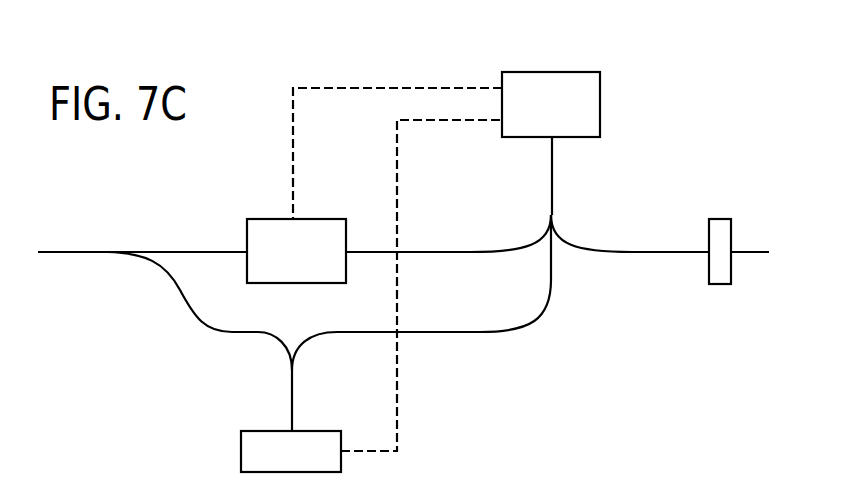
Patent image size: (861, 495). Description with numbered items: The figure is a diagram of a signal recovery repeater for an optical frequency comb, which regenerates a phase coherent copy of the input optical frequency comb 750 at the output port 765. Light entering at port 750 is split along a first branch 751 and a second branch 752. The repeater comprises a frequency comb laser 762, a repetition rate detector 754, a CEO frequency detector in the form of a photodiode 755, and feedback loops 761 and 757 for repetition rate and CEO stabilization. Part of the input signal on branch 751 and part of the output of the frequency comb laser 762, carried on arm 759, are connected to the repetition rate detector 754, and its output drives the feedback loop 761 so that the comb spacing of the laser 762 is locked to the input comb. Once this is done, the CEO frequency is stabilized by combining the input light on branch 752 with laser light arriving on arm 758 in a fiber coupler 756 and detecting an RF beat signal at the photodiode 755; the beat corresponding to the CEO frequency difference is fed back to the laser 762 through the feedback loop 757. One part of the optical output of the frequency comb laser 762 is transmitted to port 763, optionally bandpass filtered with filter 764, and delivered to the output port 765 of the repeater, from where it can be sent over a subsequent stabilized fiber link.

The input optical frequency comb 750 is at (82, 252).
The first waveguide branch 751 is at (202, 252).
The second waveguide branch 752 is at (197, 326).
The repetition rate detector 754 is at (333, 219).
The photodiode 755 is at (241, 443).
The fiber coupler 756 is at (294, 372).
The feedback loop 757 is at (398, 387).
The lower waveguide arm 758 is at (453, 332).
The upper waveguide arm 759 is at (461, 252).
The feedback loop 761 is at (362, 88).
The frequency comb laser 762 is at (527, 72).
The port 763 is at (652, 252).
The filter 764 is at (717, 219).
The output port 765 is at (756, 252).